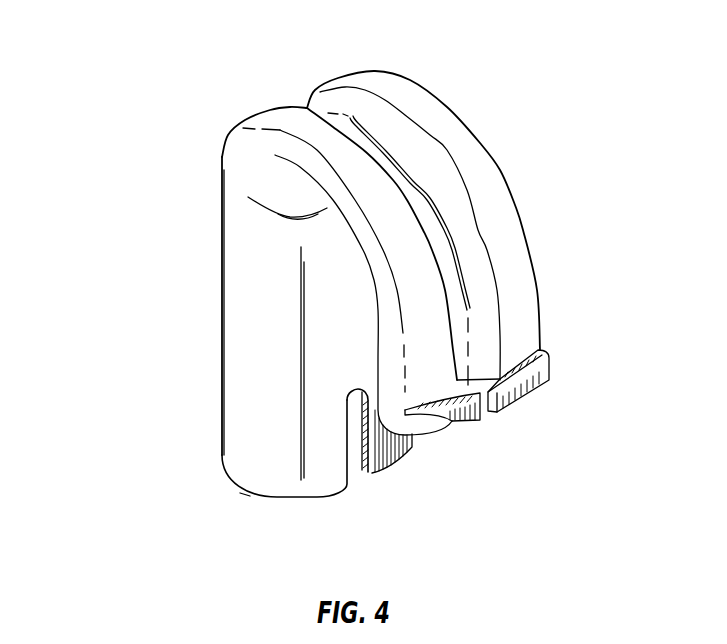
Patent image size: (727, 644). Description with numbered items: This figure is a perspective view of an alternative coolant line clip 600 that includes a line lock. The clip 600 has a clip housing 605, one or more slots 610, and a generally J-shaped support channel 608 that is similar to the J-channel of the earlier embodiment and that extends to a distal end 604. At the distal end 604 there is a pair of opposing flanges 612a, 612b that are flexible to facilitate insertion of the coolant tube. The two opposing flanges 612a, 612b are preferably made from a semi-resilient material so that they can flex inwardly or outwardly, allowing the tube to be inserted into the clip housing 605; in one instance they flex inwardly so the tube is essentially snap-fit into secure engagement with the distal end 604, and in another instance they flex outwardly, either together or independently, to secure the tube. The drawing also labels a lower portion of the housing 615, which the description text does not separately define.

The clip 600 is at (162, 92).
The distal end 604 is at (446, 426).
The clip housing 605 is at (211, 330).
The J-shaped support channel 608 is at (424, 189).
The slot 610 is at (357, 472).
The flange 612a is at (470, 420).
The flange 612b is at (547, 380).
The rounded corner 615 is at (266, 483).